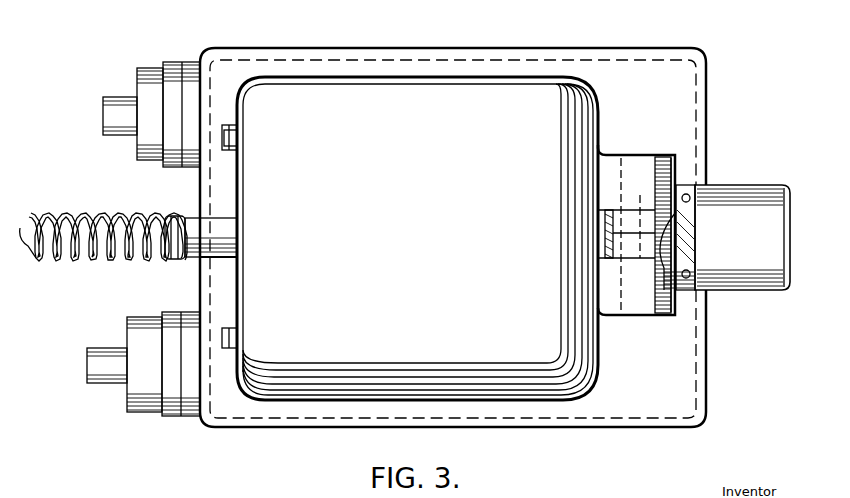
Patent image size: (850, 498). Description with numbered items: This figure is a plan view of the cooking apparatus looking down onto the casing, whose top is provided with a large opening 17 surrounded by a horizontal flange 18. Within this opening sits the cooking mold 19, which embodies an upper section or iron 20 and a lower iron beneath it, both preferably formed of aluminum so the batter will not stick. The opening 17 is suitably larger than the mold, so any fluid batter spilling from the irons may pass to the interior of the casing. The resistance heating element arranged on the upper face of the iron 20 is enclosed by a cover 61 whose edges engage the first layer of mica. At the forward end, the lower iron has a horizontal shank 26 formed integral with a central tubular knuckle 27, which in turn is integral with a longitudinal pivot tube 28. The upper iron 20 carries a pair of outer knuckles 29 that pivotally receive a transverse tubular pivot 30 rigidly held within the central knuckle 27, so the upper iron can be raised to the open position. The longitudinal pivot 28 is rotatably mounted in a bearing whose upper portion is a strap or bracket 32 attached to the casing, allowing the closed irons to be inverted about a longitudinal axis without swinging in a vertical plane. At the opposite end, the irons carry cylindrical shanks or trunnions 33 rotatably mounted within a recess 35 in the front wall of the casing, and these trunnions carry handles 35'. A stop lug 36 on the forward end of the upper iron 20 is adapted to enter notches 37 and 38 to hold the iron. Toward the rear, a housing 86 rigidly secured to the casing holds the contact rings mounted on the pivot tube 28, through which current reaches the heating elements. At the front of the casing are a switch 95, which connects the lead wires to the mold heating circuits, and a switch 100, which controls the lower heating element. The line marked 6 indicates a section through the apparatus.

The horizontal flange 18 is at (385, 60).
The large opening 17 is at (463, 76).
The cooking mold 19 is at (504, 96).
The upper section or iron 20 is at (434, 164).
The cover 61 is at (377, 128).
The section line 6- 6 is at (600, 183).
The outer knuckles 29 is at (641, 167).
The transverse tubular pivot 30 is at (622, 157).
The horizontal shank 26 is at (603, 242).
The central tubular knuckle 27 is at (633, 226).
The pivot tube 28 is at (672, 231).
The strap or bracket 32 is at (690, 207).
The housing 86 is at (762, 197).
The switch 100 is at (168, 66).
The switch 95 is at (143, 364).
The cylindrical shank or trunnion 33 is at (225, 236).
The recess 35 is at (240, 272).
The handles 35' is at (103, 221).
The notch 37 is at (225, 127).
The stop lug 36 is at (238, 139).
The notch 38 is at (226, 330).